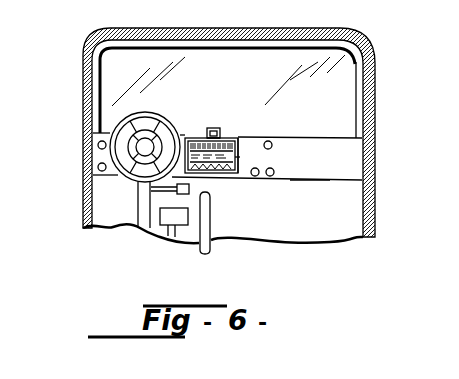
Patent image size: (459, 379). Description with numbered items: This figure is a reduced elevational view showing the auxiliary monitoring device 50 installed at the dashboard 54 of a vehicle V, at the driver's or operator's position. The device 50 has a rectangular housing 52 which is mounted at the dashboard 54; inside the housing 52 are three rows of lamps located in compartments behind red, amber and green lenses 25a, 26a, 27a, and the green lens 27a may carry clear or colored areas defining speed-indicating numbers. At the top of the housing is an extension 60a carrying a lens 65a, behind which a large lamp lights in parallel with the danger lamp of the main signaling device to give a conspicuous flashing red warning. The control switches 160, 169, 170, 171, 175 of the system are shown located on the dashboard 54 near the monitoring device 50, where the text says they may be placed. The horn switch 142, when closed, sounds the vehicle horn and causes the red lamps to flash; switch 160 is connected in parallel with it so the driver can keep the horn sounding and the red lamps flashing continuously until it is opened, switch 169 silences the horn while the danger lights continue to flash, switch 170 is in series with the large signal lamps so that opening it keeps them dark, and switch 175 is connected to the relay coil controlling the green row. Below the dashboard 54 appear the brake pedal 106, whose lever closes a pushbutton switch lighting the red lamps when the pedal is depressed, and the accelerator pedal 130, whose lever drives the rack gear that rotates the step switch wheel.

The vehicle V is at (377, 65).
The dashboard 54 is at (352, 155).
The switch 160 is at (98, 143).
The switch 169 is at (98, 166).
The horn switch 142 is at (132, 165).
The monitoring device 50 is at (228, 174).
The red lens 25a is at (194, 142).
The extension 60a is at (202, 137).
The lens 65a is at (218, 130).
The rectangular housing 52 is at (245, 143).
The switch 170 is at (272, 144).
The amber lens 26a is at (240, 157).
The switch 171 is at (275, 172).
The green lens 27a is at (255, 176).
The switch 175 is at (297, 187).
The brake pedal 106 is at (166, 225).
The accelerator pedal 130 is at (199, 253).